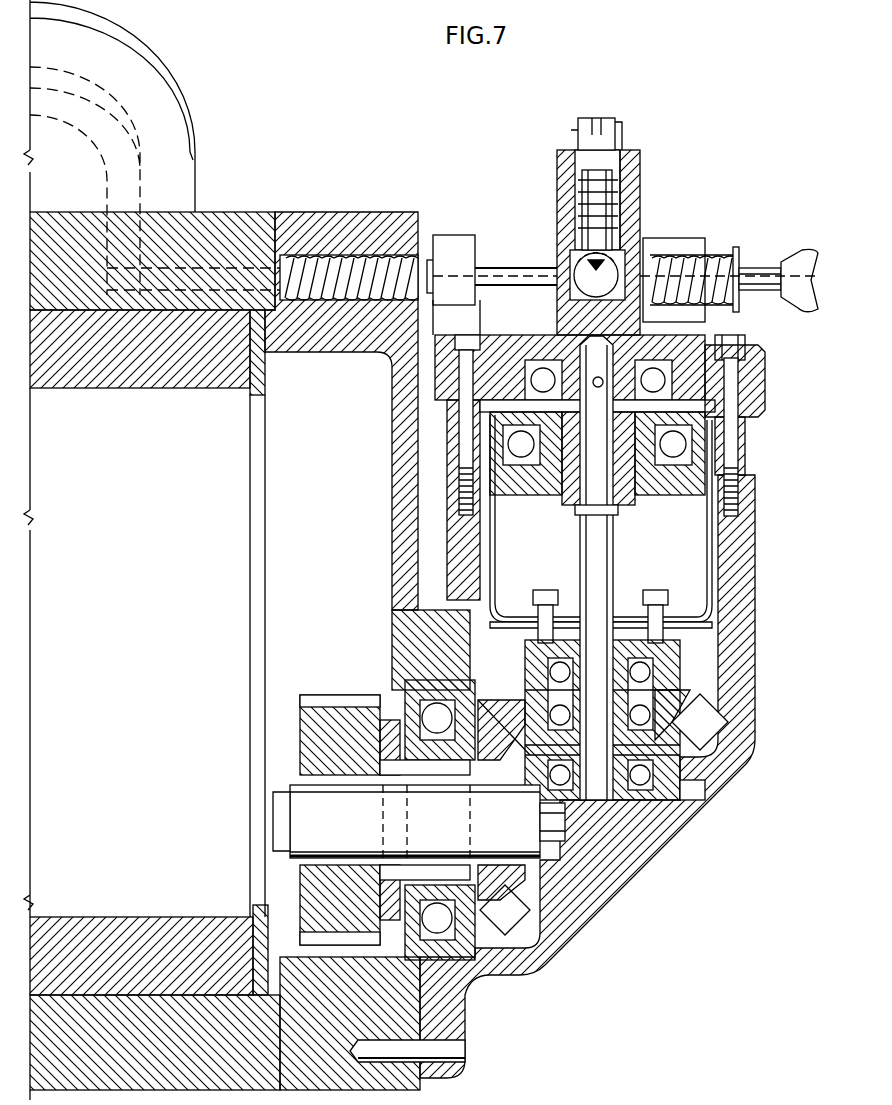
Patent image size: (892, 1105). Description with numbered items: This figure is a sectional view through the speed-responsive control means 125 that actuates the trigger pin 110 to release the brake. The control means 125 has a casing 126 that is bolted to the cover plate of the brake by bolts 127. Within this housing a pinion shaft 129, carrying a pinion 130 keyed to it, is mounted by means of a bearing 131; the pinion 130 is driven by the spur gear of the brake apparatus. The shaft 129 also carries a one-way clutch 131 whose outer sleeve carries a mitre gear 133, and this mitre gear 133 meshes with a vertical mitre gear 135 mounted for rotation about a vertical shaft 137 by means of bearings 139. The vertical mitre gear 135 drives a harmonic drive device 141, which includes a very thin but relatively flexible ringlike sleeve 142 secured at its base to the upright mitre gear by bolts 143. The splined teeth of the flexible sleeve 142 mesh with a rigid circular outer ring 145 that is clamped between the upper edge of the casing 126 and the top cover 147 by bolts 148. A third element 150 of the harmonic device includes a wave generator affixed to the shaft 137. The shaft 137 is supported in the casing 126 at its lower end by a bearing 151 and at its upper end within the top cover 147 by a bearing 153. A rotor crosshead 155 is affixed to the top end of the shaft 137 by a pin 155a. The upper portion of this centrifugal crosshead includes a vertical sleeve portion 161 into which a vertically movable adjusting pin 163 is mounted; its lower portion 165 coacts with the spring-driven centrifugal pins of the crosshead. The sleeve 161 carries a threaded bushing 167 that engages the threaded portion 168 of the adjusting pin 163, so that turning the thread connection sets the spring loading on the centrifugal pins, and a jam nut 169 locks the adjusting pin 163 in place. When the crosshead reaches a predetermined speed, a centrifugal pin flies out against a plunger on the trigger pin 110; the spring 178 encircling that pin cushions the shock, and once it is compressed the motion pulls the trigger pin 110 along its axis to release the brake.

The trigger pin 110 is at (500, 268).
The control means 125 is at (710, 810).
The casing 126 is at (638, 862).
The bolts 127 is at (455, 1048).
The pinion shaft 129 is at (362, 819).
The pinion 130 is at (362, 914).
The bearing / one-way clutch 131 is at (550, 925).
The mitre gear 133 is at (483, 905).
The vertical mitre gear 135 is at (703, 696).
The shaft 137 is at (612, 532).
The bearings 139 is at (645, 674).
The harmonic drive device 141 is at (716, 576).
The flexible ringlike sleeve 142 is at (708, 542).
The bolts 143 is at (653, 592).
The rigid circular outer ring 145 is at (745, 462).
The top cover 147 is at (750, 374).
The bolts 148 is at (735, 342).
The third element (wave generator) 150 is at (652, 462).
The bearing 151 is at (695, 784).
The bearing 153 is at (545, 372).
The rotor crosshead 155 is at (560, 190).
The pin 155a is at (598, 390).
The vertical sleeve portion 161 is at (634, 200).
The adjusting pin 163 is at (606, 216).
The lower portion 165 is at (588, 246).
The threaded bushing 167 is at (592, 150).
The threaded portion 168 is at (625, 184).
The jam nut 169 is at (622, 128).
The spring 178 is at (712, 255).